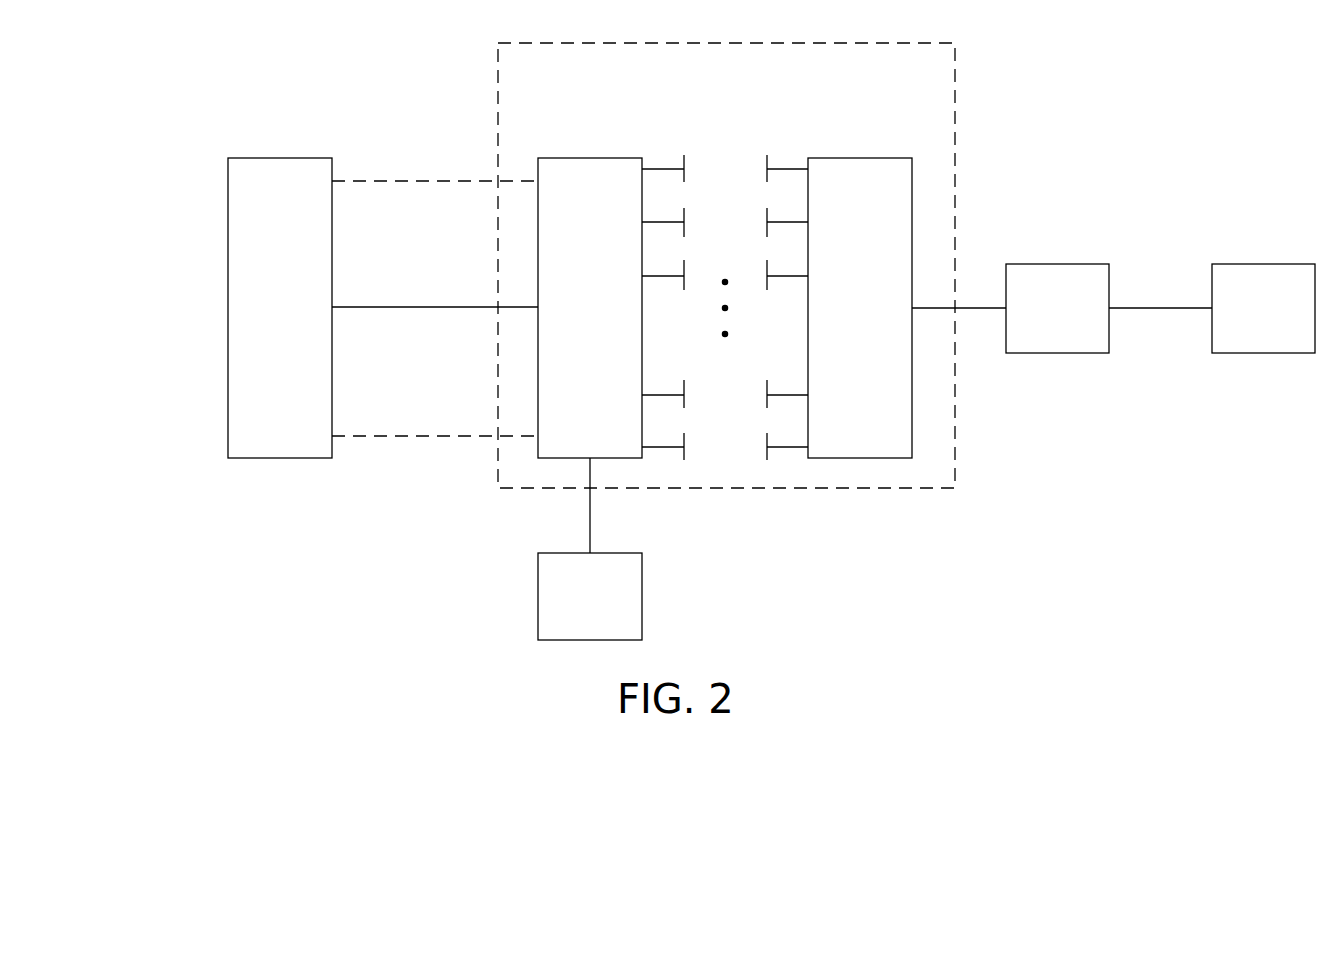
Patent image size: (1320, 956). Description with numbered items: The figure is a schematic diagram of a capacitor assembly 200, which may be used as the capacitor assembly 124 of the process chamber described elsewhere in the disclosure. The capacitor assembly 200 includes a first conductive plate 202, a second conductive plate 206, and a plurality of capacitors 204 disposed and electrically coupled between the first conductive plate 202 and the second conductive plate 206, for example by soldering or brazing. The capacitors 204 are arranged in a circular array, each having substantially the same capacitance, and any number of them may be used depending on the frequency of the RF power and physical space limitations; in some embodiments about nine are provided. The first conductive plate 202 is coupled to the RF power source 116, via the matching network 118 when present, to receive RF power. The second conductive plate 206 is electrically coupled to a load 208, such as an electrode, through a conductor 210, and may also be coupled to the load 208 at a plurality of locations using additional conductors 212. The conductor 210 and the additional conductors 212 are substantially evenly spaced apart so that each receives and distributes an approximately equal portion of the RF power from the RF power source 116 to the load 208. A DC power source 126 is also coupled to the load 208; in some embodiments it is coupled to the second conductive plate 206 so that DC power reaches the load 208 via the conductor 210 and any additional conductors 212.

The capacitor assembly 200 is at (155, 177).
The capacitor assembly 124 is at (890, 489).
The load 208 is at (300, 318).
The second conductive plate 206 is at (610, 318).
The first conductive plate 202 is at (880, 318).
The plurality of capacitors 204 is at (741, 111).
The matching network 118 is at (1078, 318).
The RF power source 116 is at (1284, 318).
The DC power source 126 is at (610, 605).
The conductor 210 is at (385, 306).
The additional conductors 212 is at (420, 180).